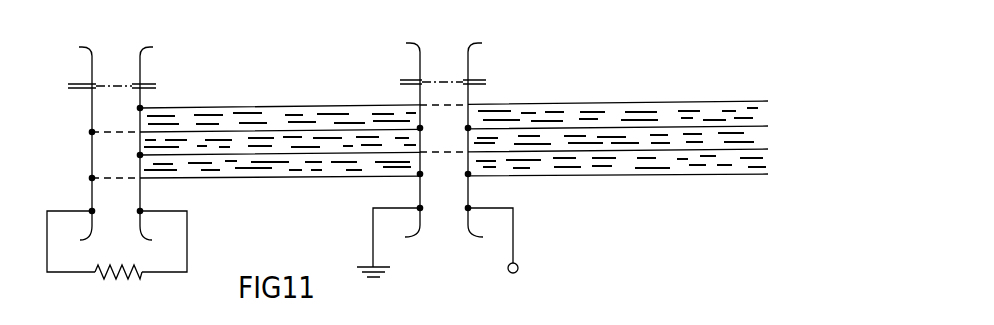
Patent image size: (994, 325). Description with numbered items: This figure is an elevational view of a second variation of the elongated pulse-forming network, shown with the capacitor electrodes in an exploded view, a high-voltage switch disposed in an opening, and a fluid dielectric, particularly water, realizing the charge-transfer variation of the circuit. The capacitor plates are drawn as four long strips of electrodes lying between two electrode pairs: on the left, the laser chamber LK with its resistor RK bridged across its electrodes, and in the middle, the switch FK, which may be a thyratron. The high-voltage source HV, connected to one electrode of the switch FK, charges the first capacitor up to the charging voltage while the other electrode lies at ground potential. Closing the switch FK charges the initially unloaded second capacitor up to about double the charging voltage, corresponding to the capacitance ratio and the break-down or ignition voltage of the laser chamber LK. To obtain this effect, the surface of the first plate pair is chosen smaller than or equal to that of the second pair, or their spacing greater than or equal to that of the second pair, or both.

The laser chamber LK is at (112, 131).
The switch FK is at (421, 149).
The resistor RK is at (117, 266).
The high-voltage source HV is at (495, 255).